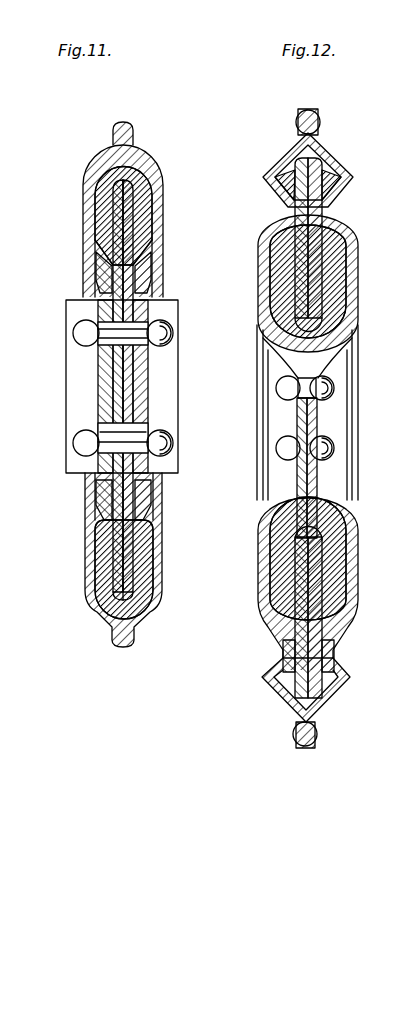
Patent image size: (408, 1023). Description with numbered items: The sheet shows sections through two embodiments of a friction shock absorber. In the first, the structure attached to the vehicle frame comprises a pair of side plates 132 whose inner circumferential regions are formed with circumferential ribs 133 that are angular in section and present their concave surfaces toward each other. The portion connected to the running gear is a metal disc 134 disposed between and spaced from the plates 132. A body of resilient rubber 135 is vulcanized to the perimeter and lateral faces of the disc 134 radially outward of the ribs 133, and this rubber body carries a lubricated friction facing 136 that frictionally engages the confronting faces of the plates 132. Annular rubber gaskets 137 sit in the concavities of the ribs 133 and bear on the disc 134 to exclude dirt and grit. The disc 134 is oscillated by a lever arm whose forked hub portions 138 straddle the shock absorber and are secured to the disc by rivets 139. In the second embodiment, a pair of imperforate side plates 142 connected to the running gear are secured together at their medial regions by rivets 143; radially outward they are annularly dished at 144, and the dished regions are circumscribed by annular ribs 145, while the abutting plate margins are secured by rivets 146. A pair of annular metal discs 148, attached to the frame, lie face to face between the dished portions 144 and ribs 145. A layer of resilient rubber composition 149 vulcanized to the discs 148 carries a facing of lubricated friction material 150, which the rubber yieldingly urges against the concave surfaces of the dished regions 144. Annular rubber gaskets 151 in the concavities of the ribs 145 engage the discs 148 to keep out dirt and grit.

In FIG. 11, the side plates 132 is at (82, 195).
In FIG. 11, the circumferential ribs 133 is at (86, 280).
In FIG. 11, the metal disc 134 is at (128, 392).
In FIG. 11, the body of resilient rubber 135 is at (96, 612).
In FIG. 11, the lubricated friction facing 136 is at (158, 568).
In FIG. 11, the annular rubber gaskets 137 is at (97, 500).
In FIG. 11, the hub portions 138 is at (104, 388).
In FIG. 11, the rivets 139 is at (84, 333).
In FIG. 12, the imperforate side plates 142 is at (312, 492).
In FIG. 12, the rivets 143 is at (331, 401).
In FIG. 12, the dished regions 144 is at (352, 566).
In FIG. 12, the annular ribs 145 is at (353, 181).
In FIG. 12, the rivets 146 is at (298, 124).
In FIG. 12, the annular metal discs 148 is at (342, 652).
In FIG. 12, the layer of resilient rubber composition 149 is at (357, 321).
In FIG. 12, the facing of lubricated friction material 150 is at (356, 276).
In FIG. 12, the annular rubber gaskets 151 is at (352, 682).